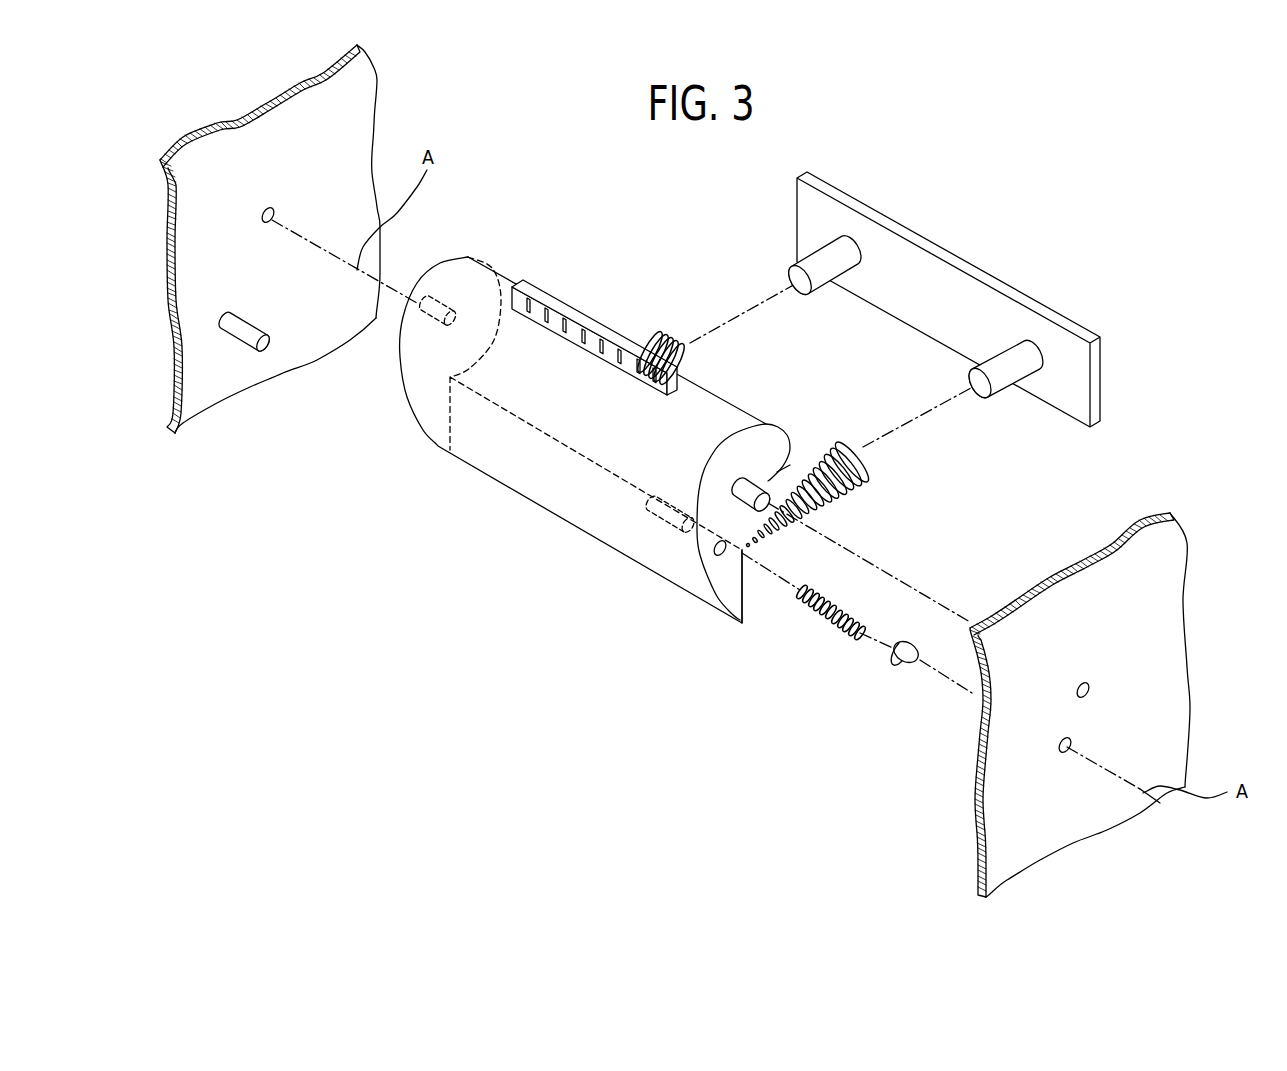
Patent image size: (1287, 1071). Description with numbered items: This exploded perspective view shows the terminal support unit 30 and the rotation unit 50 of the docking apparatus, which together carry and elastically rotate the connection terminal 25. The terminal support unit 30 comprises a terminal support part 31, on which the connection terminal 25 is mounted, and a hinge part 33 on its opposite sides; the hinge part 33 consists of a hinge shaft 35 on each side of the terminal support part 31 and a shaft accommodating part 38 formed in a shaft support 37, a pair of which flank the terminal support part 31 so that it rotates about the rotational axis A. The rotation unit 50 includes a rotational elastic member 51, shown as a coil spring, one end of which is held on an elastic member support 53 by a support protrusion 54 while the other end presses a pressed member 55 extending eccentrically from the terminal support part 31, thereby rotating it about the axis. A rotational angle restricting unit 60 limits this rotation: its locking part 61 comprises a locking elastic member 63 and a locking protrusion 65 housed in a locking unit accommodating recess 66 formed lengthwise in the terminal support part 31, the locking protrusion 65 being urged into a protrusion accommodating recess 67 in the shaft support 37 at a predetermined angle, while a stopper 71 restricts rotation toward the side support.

The connection terminal 25 is at (535, 298).
The terminal support unit 30 is at (942, 443).
The terminal support part 31 is at (762, 500).
The hinge part 33 is at (968, 510).
The hinge shaft 35 is at (830, 493).
The shaft support 37 is at (363, 107).
The shaft accommodating part 38 is at (1080, 685).
The rotation unit 50 is at (953, 160).
The rotational elastic member 51 is at (850, 443).
The elastic member support 53 is at (898, 222).
The support protrusion 54 is at (1020, 358).
The pressed member 55 is at (742, 600).
The rotational angle restricting unit 60 is at (287, 507).
The locking part 61 is at (637, 652).
The locking elastic member 63 is at (812, 603).
The locking protrusion 65 is at (897, 657).
The locking unit accommodating recess 66 is at (720, 553).
The protrusion accommodating recess 67 is at (1067, 747).
The stopper 71 is at (266, 353).